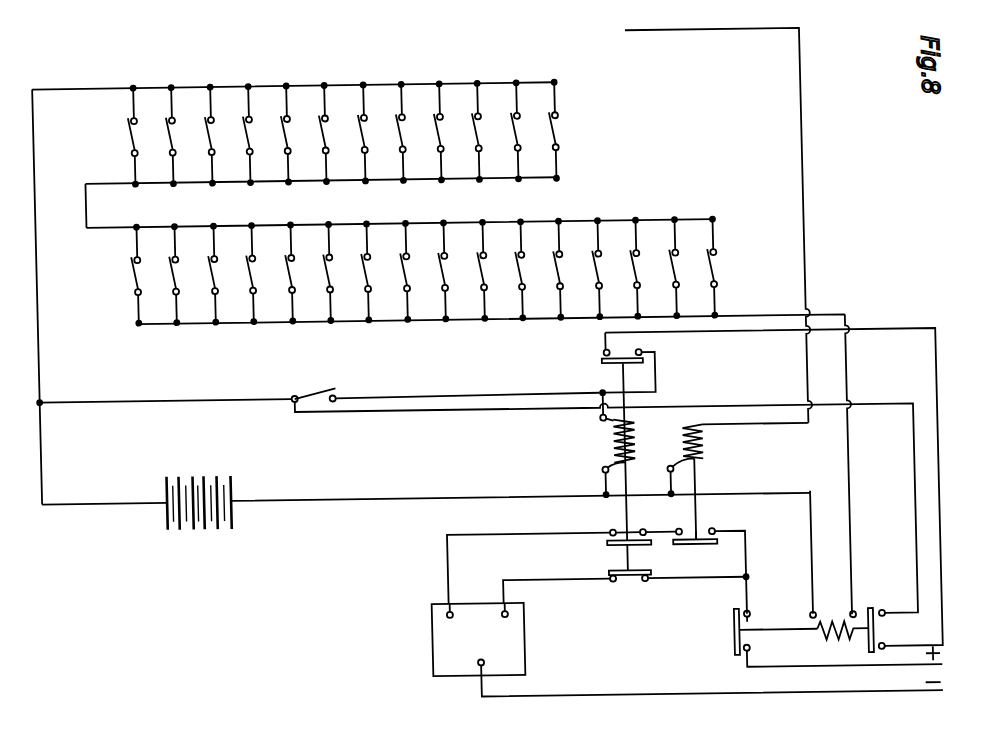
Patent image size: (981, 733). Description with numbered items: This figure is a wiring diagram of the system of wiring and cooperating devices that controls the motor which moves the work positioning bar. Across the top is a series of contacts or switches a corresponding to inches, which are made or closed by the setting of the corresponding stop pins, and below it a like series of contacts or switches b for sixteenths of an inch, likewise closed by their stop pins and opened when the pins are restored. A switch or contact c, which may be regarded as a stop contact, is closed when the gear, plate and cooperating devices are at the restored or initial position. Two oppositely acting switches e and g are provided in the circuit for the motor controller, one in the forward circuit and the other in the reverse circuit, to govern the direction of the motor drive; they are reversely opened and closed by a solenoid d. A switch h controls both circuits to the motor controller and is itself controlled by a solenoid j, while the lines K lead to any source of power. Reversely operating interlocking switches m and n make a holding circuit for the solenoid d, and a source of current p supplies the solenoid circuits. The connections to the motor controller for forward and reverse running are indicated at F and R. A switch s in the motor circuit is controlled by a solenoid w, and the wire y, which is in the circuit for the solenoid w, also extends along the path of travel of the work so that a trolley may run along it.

The wire y is at (713, 314).
The series of contacts or switches a is at (311, 291).
The series of contacts or switches b is at (471, 420).
The switch or contact c is at (478, 491).
The interlocking switch m is at (771, 488).
The solenoid d is at (626, 444).
The solenoid w is at (738, 481).
The source of current p is at (426, 487).
The switch e is at (564, 555).
The switch s is at (710, 559).
The switch g is at (625, 586).
The forward connection F is at (450, 620).
The reverse connection R is at (505, 620).
The switch h is at (838, 635).
The solenoid j is at (839, 617).
The interlocking switch n is at (880, 630).
The lines to source of power K is at (945, 665).